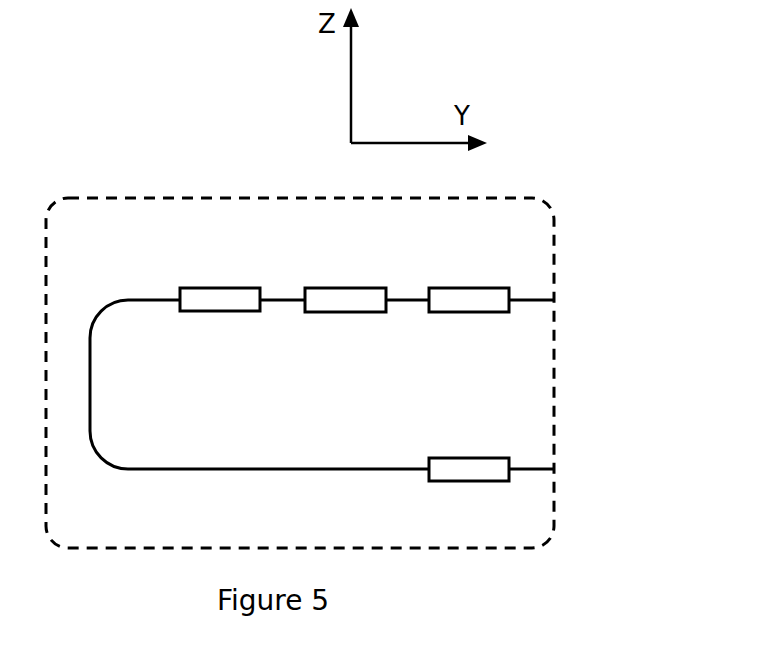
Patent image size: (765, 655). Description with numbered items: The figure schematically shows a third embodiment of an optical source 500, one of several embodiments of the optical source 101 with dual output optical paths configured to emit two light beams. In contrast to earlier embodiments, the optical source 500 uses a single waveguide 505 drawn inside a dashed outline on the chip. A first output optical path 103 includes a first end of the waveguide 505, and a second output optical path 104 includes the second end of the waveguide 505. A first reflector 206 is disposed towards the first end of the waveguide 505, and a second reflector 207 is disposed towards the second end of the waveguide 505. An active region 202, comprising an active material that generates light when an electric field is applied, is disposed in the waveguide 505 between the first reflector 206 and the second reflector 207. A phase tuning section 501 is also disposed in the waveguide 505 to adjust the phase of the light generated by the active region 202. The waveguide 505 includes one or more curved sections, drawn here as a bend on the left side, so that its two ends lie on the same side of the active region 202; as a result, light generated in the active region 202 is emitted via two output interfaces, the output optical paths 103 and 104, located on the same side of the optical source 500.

The optical source 500 is at (247, 136).
The optical source 101 is at (124, 197).
The phase tuning section 501 is at (214, 287).
The active region 202 is at (349, 287).
The first reflector 206 is at (462, 287).
The second reflector 207 is at (475, 457).
The waveguide 505 is at (248, 467).
The first output optical path 103 is at (554, 299).
The second output optical path 104 is at (554, 470).